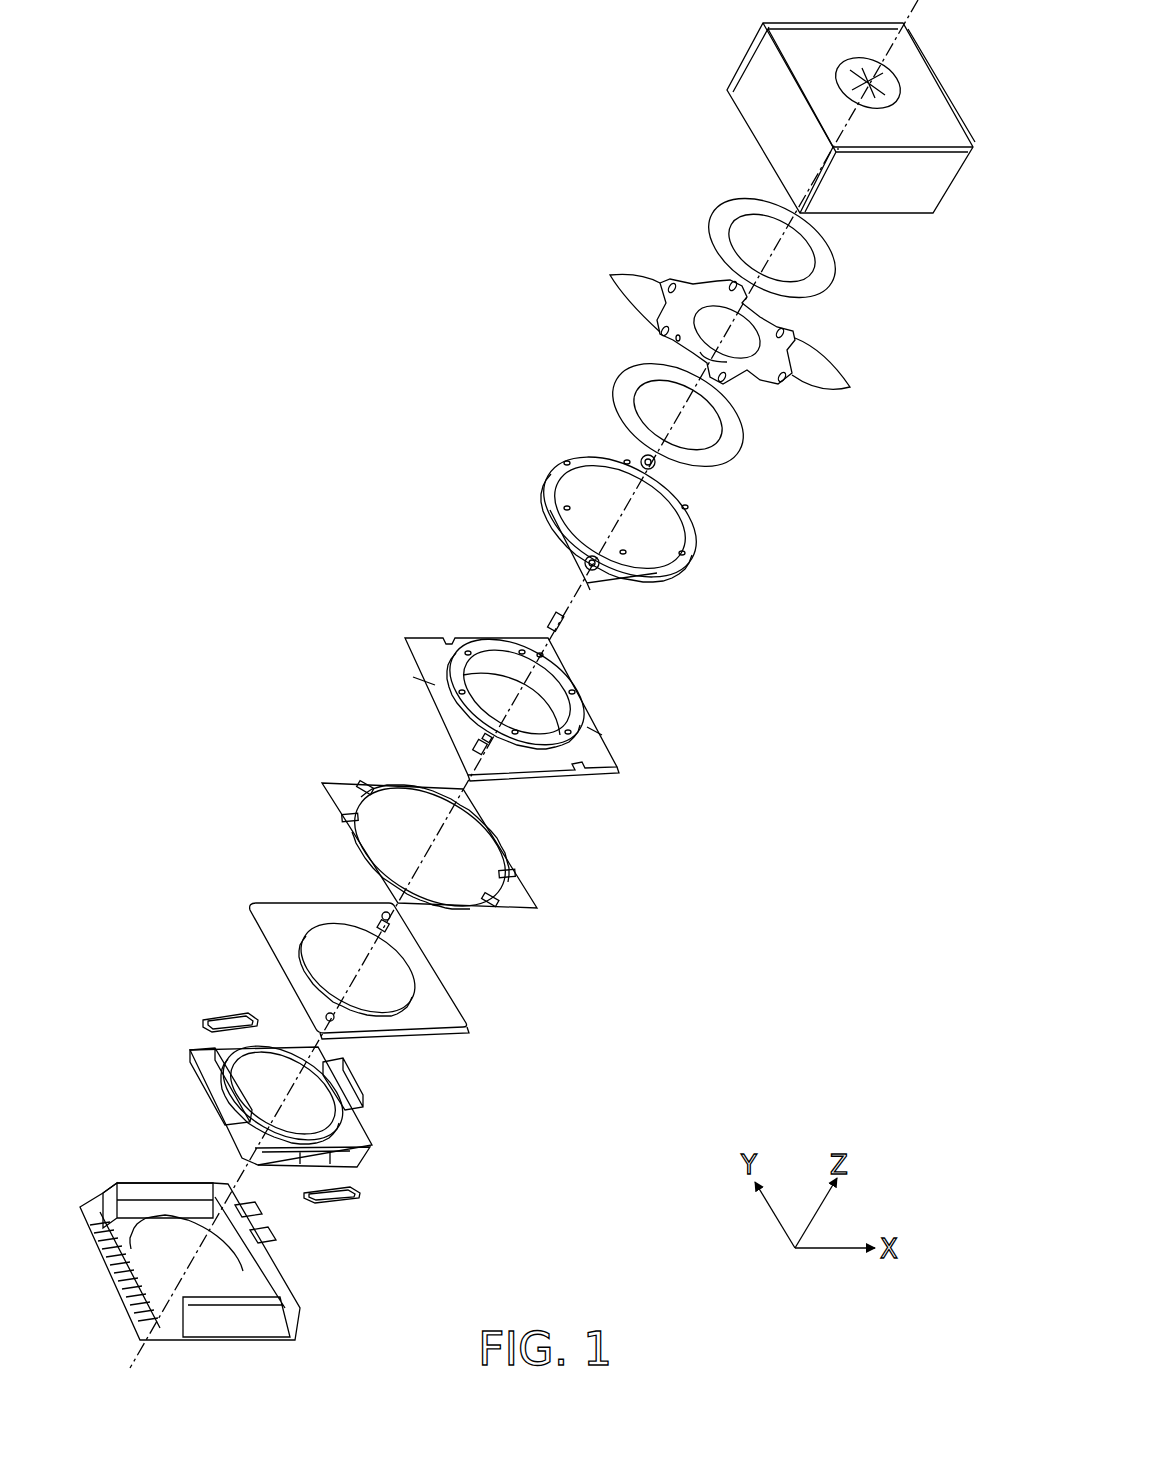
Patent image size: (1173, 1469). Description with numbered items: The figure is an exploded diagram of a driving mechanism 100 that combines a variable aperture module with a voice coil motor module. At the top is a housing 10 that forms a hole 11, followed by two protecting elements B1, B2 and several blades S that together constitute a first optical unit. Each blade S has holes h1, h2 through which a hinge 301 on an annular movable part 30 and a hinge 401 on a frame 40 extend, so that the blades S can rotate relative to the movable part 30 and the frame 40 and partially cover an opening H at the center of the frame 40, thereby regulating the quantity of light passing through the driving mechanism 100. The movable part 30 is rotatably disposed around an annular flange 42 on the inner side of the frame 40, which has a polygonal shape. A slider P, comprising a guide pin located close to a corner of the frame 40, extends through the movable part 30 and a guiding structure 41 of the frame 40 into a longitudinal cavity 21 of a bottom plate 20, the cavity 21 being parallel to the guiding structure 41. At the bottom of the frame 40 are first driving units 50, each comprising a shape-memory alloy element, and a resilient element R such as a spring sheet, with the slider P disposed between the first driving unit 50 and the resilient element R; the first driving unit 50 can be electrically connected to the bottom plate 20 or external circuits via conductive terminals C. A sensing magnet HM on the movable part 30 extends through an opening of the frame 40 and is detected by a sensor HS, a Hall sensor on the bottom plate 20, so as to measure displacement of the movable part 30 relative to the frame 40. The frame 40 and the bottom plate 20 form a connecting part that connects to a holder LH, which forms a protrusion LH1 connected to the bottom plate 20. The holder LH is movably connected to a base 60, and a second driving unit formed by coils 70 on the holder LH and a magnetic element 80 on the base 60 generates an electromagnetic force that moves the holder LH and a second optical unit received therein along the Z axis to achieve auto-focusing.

The driving mechanism 100 is at (212, 50).
The housing 10 is at (745, 54).
The hole 11 is at (880, 80).
The protecting element B1 is at (722, 215).
The blades S is at (658, 300).
The hole h1 is at (662, 324).
The hole h2 is at (675, 340).
The protecting element B2 is at (625, 387).
The hinge 301 is at (645, 460).
The annular movable part 30 is at (545, 480).
The slider P is at (660, 464).
The sensing magnet HM is at (552, 616).
The frame 40 is at (405, 645).
The hinge 401 is at (460, 691).
The opening H is at (535, 712).
The conductive terminals C is at (365, 788).
The resilient element R is at (335, 790).
The guiding structure 41 is at (486, 757).
The annular flange 42 is at (545, 758).
The first driving unit 50 is at (470, 805).
The bottom plate 20 is at (272, 903).
The longitudinal cavity 21 is at (392, 917).
The sensor HS is at (393, 926).
The coils 70 is at (224, 1018).
The protrusion LH1 is at (200, 1068).
The magnetic element 80 is at (156, 1198).
The holder LH is at (372, 1150).
The base 60 is at (300, 1318).